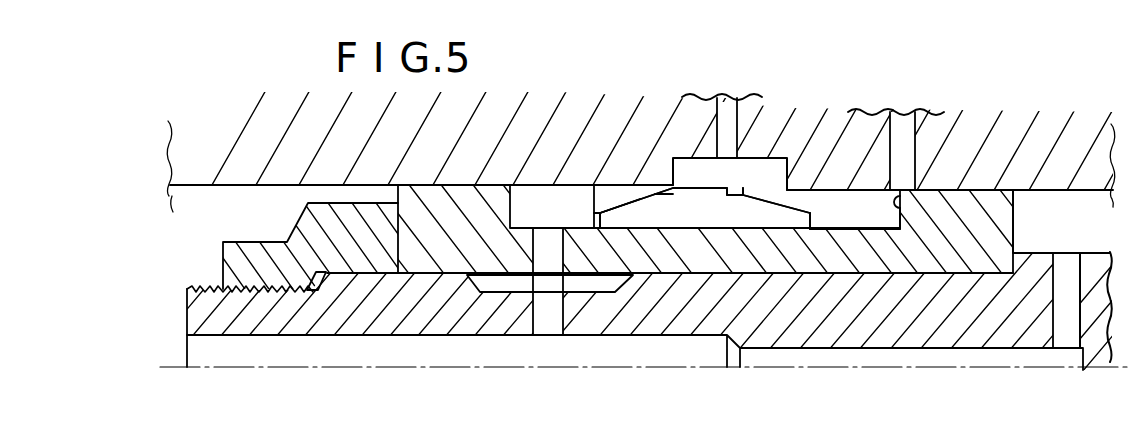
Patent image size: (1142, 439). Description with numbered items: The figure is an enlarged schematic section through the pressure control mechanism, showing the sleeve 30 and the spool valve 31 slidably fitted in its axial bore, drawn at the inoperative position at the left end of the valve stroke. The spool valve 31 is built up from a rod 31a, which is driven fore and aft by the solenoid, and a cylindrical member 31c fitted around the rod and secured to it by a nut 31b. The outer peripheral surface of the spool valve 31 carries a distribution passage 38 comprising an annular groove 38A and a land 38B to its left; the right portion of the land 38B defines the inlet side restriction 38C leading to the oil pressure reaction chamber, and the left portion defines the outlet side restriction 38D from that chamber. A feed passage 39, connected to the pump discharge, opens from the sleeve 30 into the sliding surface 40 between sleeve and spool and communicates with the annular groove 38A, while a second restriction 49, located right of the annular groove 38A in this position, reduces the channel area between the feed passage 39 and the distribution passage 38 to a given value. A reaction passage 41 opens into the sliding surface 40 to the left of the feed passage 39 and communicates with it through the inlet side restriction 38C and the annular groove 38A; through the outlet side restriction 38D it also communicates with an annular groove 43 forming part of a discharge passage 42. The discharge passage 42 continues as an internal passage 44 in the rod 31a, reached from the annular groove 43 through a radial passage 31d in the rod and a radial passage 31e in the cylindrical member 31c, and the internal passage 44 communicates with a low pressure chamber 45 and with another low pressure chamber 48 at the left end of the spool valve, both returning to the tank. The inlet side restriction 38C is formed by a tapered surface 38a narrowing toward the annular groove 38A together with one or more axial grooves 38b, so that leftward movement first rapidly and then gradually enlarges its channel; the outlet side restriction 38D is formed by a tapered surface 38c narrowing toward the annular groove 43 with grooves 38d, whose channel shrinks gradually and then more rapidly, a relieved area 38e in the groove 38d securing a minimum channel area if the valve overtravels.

The sleeve 30 is at (427, 148).
The spool valve 31 is at (412, 184).
The rod 31a is at (187, 310).
The nut 31b is at (282, 243).
The cylindrical member 31c is at (482, 193).
The radial passage 31d is at (541, 255).
The radial passage 31e is at (535, 318).
The distribution passage 38 is at (800, 206).
The tapered surface 38a is at (812, 210).
The axially extending groove 38b is at (747, 187).
The tapered surface 38c is at (603, 213).
The groove 38d is at (616, 200).
The relieved area 38e is at (670, 192).
The annular groove 38A is at (872, 192).
The land 38B is at (703, 187).
The inlet side restriction 38C is at (780, 198).
The outlet side restriction 38D is at (627, 183).
The feed passage 39 is at (918, 152).
The sliding surface 40 is at (1080, 208).
The reaction passage 41 is at (736, 116).
The discharge passage 42 is at (310, 347).
The annular groove 43 is at (513, 205).
The internal passage 44 is at (480, 350).
The low pressure chamber 45 is at (1050, 200).
The low pressure chamber 48 is at (162, 270).
The second restriction 49 is at (900, 197).